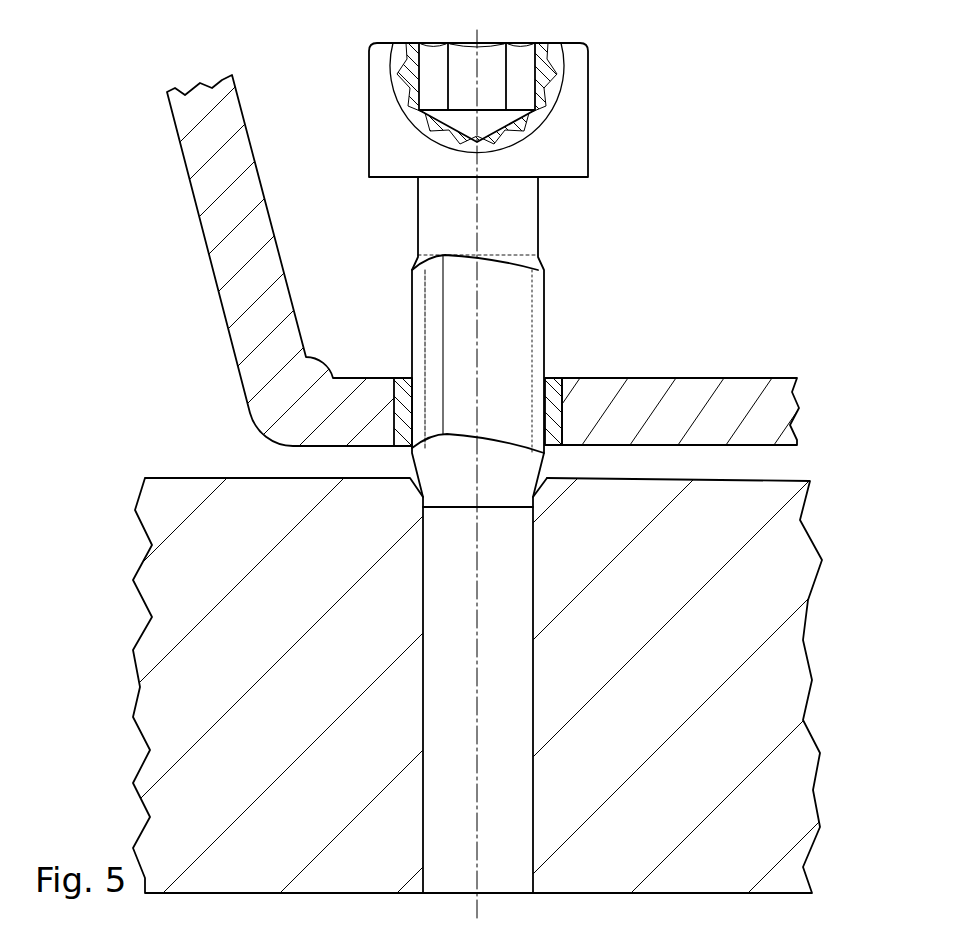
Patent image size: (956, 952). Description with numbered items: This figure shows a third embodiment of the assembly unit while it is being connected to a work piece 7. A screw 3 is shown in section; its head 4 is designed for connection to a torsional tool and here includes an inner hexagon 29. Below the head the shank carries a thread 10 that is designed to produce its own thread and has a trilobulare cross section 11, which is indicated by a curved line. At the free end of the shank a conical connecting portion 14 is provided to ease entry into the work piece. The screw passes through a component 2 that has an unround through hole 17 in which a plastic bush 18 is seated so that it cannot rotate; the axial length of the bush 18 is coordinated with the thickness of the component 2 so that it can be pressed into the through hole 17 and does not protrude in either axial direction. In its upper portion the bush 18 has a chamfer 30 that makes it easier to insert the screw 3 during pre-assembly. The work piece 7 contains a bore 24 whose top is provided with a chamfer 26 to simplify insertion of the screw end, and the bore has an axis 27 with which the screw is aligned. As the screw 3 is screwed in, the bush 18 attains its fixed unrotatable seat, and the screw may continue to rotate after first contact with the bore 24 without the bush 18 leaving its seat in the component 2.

The component 2 is at (703, 378).
The screw 3 is at (618, 91).
The head 4 is at (560, 148).
The work piece 7 is at (762, 681).
The thread 10 is at (532, 322).
The trilobulare cross section 11 is at (504, 268).
The connecting portion 14 is at (545, 462).
The through hole 17 is at (562, 400).
The bush 18 is at (398, 374).
The bore 24 is at (533, 780).
The chamfer 26 is at (543, 488).
The axis 27 is at (477, 833).
The inner hexagon 29 is at (495, 87).
The chamfer 30 is at (411, 377).